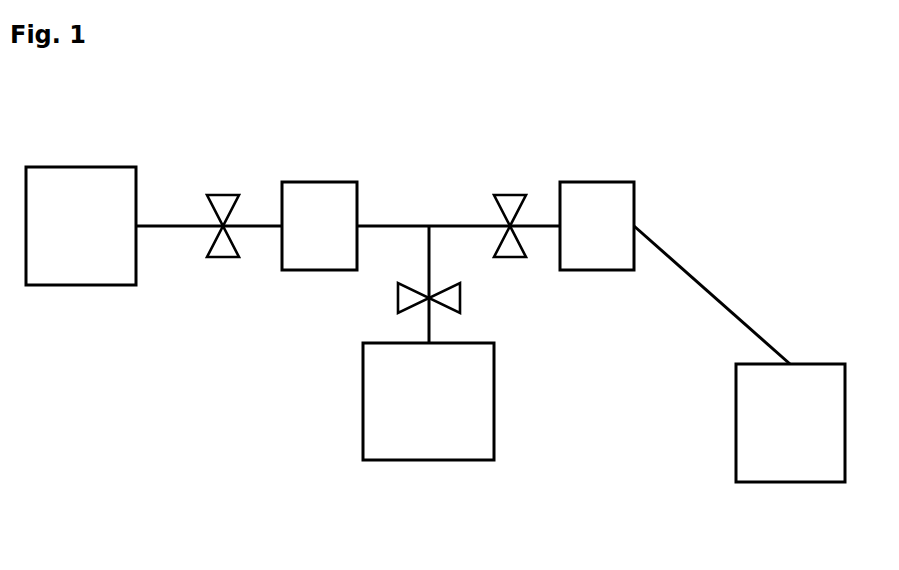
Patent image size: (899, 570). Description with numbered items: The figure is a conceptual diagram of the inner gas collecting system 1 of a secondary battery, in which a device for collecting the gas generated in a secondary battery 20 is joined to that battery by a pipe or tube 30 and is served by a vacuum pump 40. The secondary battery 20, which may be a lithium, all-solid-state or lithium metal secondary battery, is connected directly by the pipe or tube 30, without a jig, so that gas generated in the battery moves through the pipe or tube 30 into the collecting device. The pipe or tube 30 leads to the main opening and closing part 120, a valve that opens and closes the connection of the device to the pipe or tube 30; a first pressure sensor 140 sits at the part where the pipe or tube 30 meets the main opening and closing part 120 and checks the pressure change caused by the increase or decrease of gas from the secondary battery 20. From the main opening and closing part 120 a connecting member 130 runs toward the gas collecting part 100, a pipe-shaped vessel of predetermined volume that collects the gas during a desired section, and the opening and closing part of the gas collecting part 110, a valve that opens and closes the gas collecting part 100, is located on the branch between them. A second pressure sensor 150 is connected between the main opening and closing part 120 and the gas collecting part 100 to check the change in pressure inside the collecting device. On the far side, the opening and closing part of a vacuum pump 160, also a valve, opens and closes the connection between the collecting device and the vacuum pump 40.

The inner gas collecting system of the secondary battery 1 is at (758, 135).
The secondary battery 20 is at (736, 443).
The pipe or tube 30 is at (727, 307).
The vacuum pump 40 is at (98, 167).
The gas collecting part 100 is at (437, 461).
The opening and closing part of the gas collecting part 110 is at (397, 298).
The main opening and closing part 120 is at (512, 195).
The connecting member 130 is at (438, 224).
The first pressure sensor 140 is at (576, 182).
The second pressure sensor 150 is at (317, 182).
The opening and closing part of a vacuum pump 160 is at (226, 195).